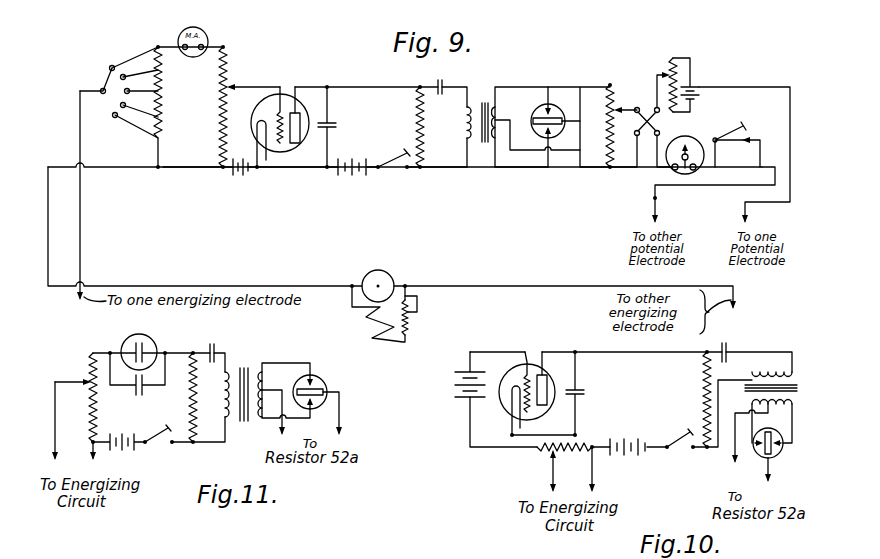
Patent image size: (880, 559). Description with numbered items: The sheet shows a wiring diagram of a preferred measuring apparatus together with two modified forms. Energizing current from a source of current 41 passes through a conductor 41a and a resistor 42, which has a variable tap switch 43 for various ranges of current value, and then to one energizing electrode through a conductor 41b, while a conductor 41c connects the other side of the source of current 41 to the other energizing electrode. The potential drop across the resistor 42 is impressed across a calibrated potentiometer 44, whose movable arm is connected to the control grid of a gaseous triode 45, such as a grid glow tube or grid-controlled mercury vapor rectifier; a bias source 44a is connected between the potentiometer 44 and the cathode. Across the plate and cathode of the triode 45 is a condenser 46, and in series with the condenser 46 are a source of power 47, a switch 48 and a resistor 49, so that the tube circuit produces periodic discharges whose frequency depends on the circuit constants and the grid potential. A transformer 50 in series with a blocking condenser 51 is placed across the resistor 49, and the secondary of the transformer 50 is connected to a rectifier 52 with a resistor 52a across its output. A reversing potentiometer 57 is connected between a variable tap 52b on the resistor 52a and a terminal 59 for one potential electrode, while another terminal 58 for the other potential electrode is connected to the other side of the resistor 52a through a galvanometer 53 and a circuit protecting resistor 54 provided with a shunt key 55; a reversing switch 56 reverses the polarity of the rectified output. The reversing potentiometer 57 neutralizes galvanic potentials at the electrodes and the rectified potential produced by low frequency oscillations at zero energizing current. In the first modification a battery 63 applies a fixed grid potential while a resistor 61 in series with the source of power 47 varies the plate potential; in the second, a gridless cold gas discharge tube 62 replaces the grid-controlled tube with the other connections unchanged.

In FIG. 9, the source of current 41 is at (390, 276).
In FIG. 9, the conductor 41a is at (311, 279).
In FIG. 10, the conductor 41a is at (591, 470).
In FIG. 11, the conductor 41a is at (92, 445).
In FIG. 9, the conductor 41b is at (82, 243).
In FIG. 10, the conductor 41b is at (552, 472).
In FIG. 11, the conductor 41b is at (58, 432).
In FIG. 9, the conductor 41c is at (475, 284).
In FIG. 9, the resistor 42 is at (160, 118).
In FIG. 9, the variable tap switch 43 is at (101, 90).
In FIG. 9, the calibrated potentiometer 44 is at (226, 66).
In FIG. 9, the bias source 44a is at (236, 170).
In FIG. 9, the gaseous triode 45 is at (283, 104).
In FIG. 10, the gaseous triode 45 is at (529, 372).
In FIG. 9, the condenser 46 is at (330, 121).
In FIG. 10, the condenser 46 is at (588, 388).
In FIG. 11, the condenser 46 is at (145, 391).
In FIG. 9, the source of power 47 is at (349, 158).
In FIG. 10, the source of power 47 is at (633, 440).
In FIG. 11, the source of power 47 is at (129, 438).
In FIG. 9, the switch 48 is at (403, 152).
In FIG. 10, the switch 48 is at (691, 455).
In FIG. 11, the switch 48 is at (172, 446).
In FIG. 9, the resistor 49 is at (422, 127).
In FIG. 10, the resistor 49 is at (704, 386).
In FIG. 11, the resistor 49 is at (200, 398).
In FIG. 9, the transformer 50 is at (470, 104).
In FIG. 10, the transformer 50 is at (752, 388).
In FIG. 11, the transformer 50 is at (240, 367).
In FIG. 9, the blocking condenser 51 is at (444, 82).
In FIG. 10, the blocking condenser 51 is at (728, 346).
In FIG. 11, the blocking condenser 51 is at (216, 347).
In FIG. 9, the rectifier 52 is at (554, 105).
In FIG. 10, the rectifier 52 is at (777, 458).
In FIG. 11, the rectifier 52 is at (325, 381).
In FIG. 9, the resistor 52a is at (606, 118).
In FIG. 9, the variable tap 52b is at (637, 113).
In FIG. 9, the galvanometer 53 is at (691, 138).
In FIG. 9, the circuit protecting resistor 54 is at (731, 170).
In FIG. 9, the shunt key 55 is at (726, 129).
In FIG. 9, the reversing switch 56 is at (650, 130).
In FIG. 9, the reversing potentiometer 57 is at (694, 66).
In FIG. 9, the terminal 58 is at (653, 200).
In FIG. 9, the terminal 59 is at (747, 211).
In FIG. 10, the resistor 61 is at (596, 443).
In FIG. 11, the resistor 61 is at (96, 401).
In FIG. 11, the gas discharge tube 62 is at (151, 342).
In FIG. 10, the battery 63 is at (466, 371).